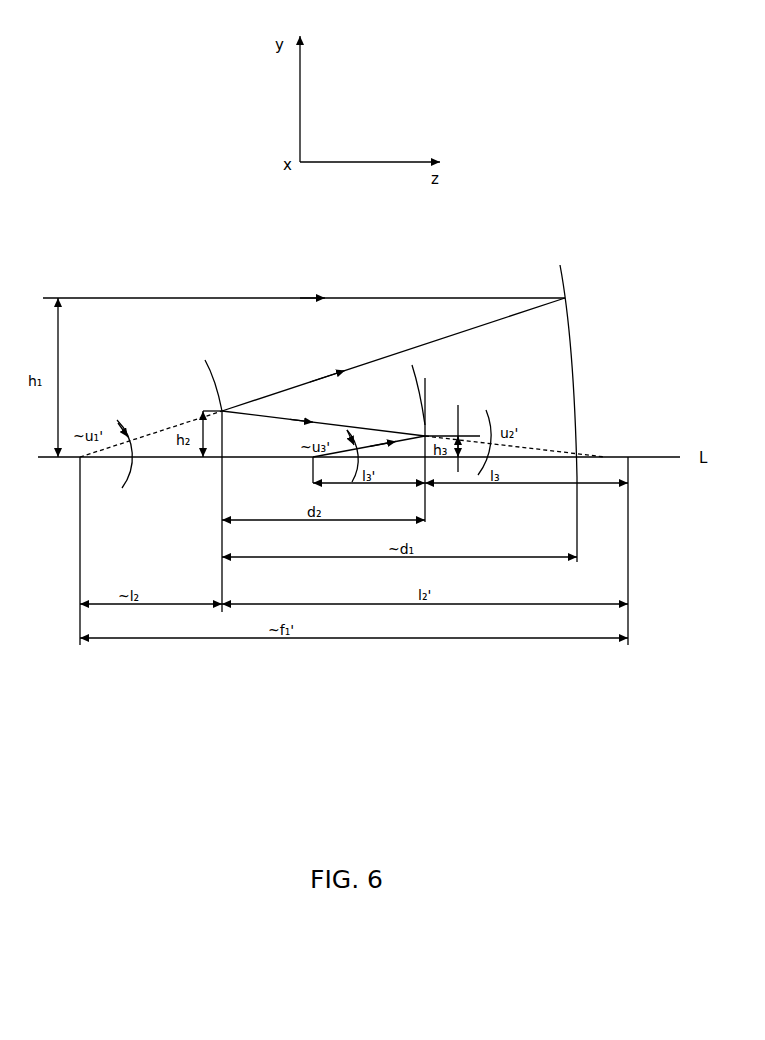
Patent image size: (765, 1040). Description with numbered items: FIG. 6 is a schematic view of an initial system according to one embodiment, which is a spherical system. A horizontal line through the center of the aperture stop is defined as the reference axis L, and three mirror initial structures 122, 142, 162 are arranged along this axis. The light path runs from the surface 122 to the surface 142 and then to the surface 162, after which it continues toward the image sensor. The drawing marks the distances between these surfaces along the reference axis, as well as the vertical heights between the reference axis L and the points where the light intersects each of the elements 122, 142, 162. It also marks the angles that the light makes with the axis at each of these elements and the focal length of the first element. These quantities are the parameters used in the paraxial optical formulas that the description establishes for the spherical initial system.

The lens (first lens element) 122 is at (571, 322).
The lens (second lens element) 142 is at (208, 372).
The lens (third lens element) 162 is at (420, 380).